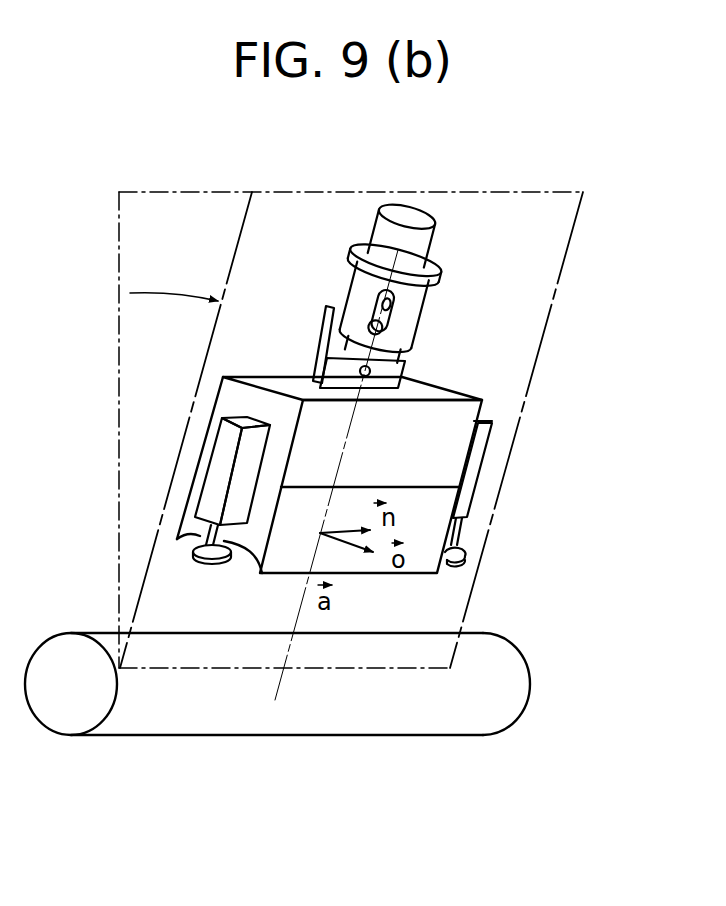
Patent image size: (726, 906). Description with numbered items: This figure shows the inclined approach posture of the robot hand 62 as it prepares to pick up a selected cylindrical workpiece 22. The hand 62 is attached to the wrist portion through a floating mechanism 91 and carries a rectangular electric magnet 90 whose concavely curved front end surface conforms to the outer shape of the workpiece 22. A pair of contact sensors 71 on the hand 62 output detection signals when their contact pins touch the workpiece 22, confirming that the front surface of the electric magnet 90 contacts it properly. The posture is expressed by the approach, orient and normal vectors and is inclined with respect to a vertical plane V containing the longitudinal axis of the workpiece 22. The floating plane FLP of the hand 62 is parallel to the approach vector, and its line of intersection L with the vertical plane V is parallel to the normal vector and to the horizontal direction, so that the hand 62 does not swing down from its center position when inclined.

The floating plane FLP is at (572, 257).
The vertical plane V is at (121, 345).
The cylindrical workpiece 22 is at (509, 656).
The line of intersection L is at (383, 668).
The hand 62 is at (452, 442).
The contact sensor 71 is at (213, 484).
The electric magnet 90 is at (278, 565).
The floating mechanism 91 is at (430, 332).